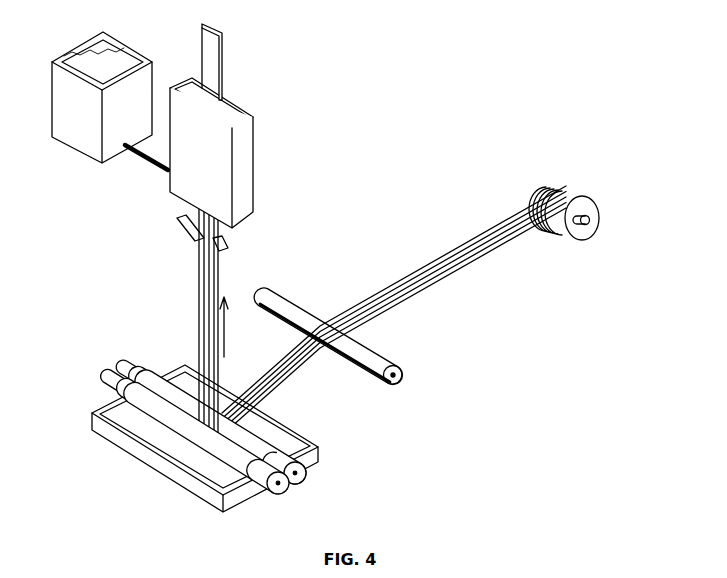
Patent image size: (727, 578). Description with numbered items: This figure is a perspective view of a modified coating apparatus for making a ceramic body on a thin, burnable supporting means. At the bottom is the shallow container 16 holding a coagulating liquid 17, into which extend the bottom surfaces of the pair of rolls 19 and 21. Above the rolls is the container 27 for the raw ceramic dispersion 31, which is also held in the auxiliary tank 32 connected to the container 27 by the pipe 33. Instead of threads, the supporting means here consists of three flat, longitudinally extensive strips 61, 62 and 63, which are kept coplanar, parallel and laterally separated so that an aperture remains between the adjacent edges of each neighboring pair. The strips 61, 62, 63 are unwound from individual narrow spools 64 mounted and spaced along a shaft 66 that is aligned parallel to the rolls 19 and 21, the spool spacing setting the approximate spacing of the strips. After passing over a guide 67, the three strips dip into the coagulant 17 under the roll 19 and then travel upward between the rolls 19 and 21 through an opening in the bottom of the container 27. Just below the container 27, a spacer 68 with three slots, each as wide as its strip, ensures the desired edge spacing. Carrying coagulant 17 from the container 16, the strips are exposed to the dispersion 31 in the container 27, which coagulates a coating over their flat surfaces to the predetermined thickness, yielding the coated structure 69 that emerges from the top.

The shallow container 16 is at (199, 442).
The coagulating liquid 17 is at (187, 455).
The roll 19 is at (297, 476).
The roll 21 is at (282, 488).
The container 27 is at (245, 155).
The raw ceramic dispersion 31 is at (101, 70).
The auxiliary tank 32 is at (70, 132).
The pipe 33 is at (130, 160).
The strip 61 is at (380, 312).
The strip 62 is at (394, 310).
The strip 63 is at (396, 284).
The spool 64 is at (580, 189).
The shaft 66 is at (590, 222).
The guide 67 is at (373, 357).
The spacer 68 is at (180, 221).
The coated structure 69 is at (210, 53).